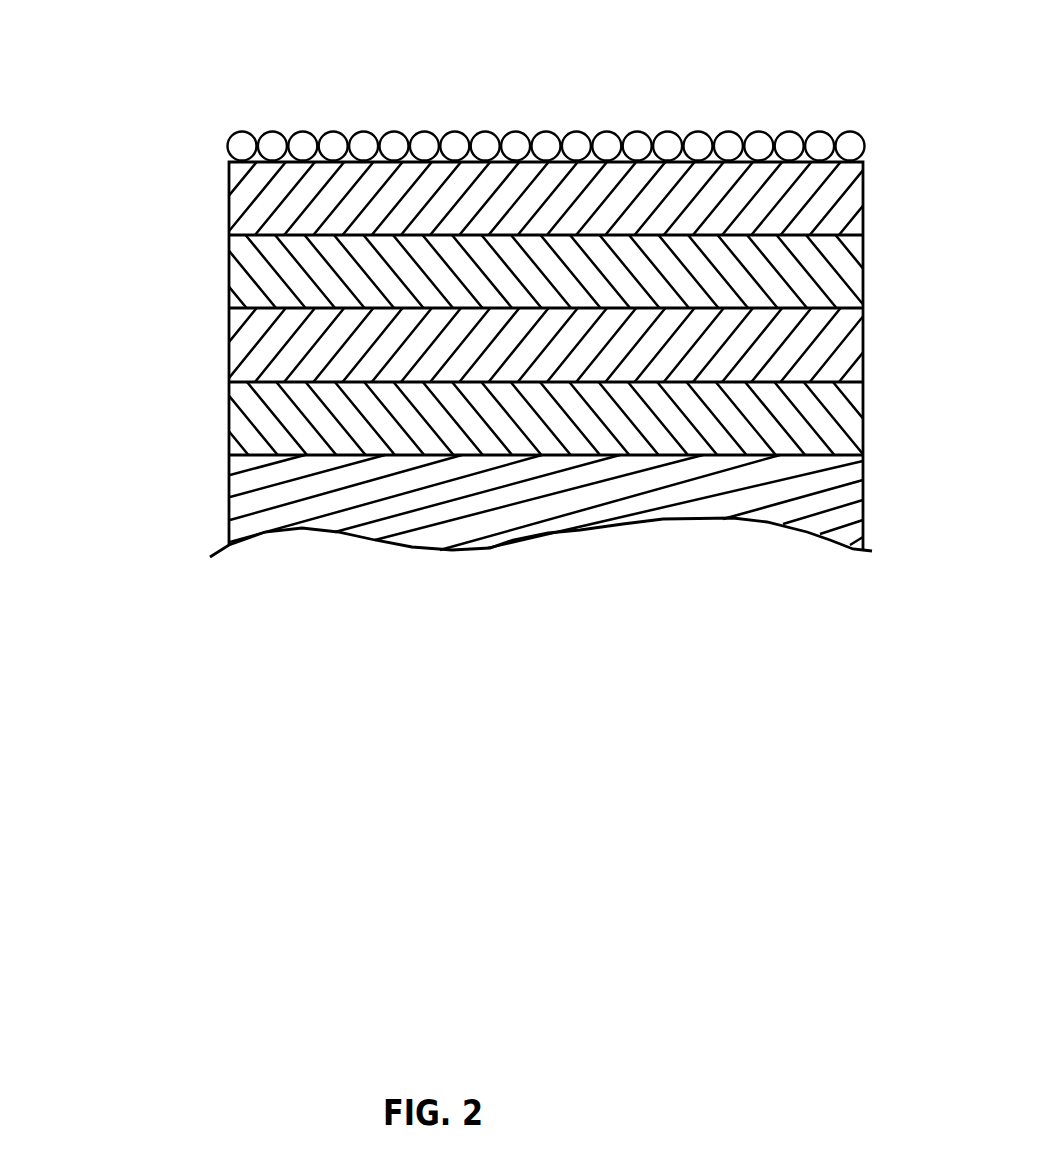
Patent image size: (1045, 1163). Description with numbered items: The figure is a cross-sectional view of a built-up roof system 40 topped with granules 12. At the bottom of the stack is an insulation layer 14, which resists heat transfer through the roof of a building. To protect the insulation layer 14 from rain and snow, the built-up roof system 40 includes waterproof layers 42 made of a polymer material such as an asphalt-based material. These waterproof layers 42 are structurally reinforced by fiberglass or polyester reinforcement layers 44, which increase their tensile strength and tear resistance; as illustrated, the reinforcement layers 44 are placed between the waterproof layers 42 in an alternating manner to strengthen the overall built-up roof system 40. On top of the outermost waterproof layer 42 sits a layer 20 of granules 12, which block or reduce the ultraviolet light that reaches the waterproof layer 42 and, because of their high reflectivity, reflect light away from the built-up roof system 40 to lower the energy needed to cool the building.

The granules 12 is at (272, 132).
The insulation layer 14 is at (229, 505).
The layer of granules 20 is at (890, 126).
The built-up roof (BUR) system 40 is at (170, 86).
The waterproof layer 42 is at (229, 207).
The reinforcement layer 44 is at (229, 270).